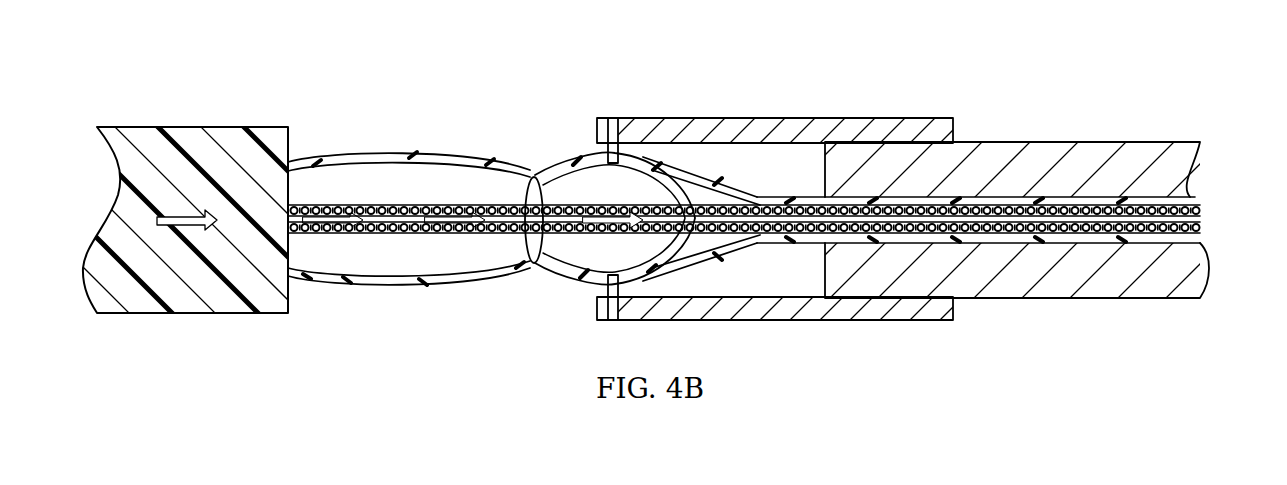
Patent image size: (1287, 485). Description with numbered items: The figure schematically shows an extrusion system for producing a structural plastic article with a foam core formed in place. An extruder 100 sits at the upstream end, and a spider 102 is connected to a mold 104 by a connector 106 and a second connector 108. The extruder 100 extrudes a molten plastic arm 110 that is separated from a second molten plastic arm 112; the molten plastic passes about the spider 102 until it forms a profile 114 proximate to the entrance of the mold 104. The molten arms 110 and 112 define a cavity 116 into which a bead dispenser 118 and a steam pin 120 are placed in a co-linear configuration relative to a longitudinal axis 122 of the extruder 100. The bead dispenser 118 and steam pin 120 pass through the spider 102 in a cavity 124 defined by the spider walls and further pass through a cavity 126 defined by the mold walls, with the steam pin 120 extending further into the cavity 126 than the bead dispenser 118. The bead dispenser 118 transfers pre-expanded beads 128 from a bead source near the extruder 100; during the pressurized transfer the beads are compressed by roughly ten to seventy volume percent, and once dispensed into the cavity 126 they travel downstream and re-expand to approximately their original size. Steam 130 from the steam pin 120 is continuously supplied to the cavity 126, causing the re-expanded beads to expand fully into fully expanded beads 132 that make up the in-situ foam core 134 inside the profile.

The extruder 100 is at (200, 313).
The spider 102 is at (568, 188).
The mold 104 is at (987, 160).
The connector 106 is at (790, 135).
The second connector 108 is at (620, 144).
The molten plastic arm 110 is at (363, 288).
The second molten plastic arm 112 is at (327, 158).
The profile 114 is at (812, 243).
The cavity 116 is at (449, 253).
The bead dispenser 118 is at (405, 203).
The steam pin 120 is at (373, 203).
The longitudinal axis 122 is at (172, 217).
The cavity 124 is at (597, 190).
The cavity 126 is at (1010, 207).
The pre-expanded beads 128 is at (330, 234).
The steam 130 is at (1103, 207).
The fully expanded beads 132 is at (1155, 222).
The in-situ foam core 134 is at (1190, 209).